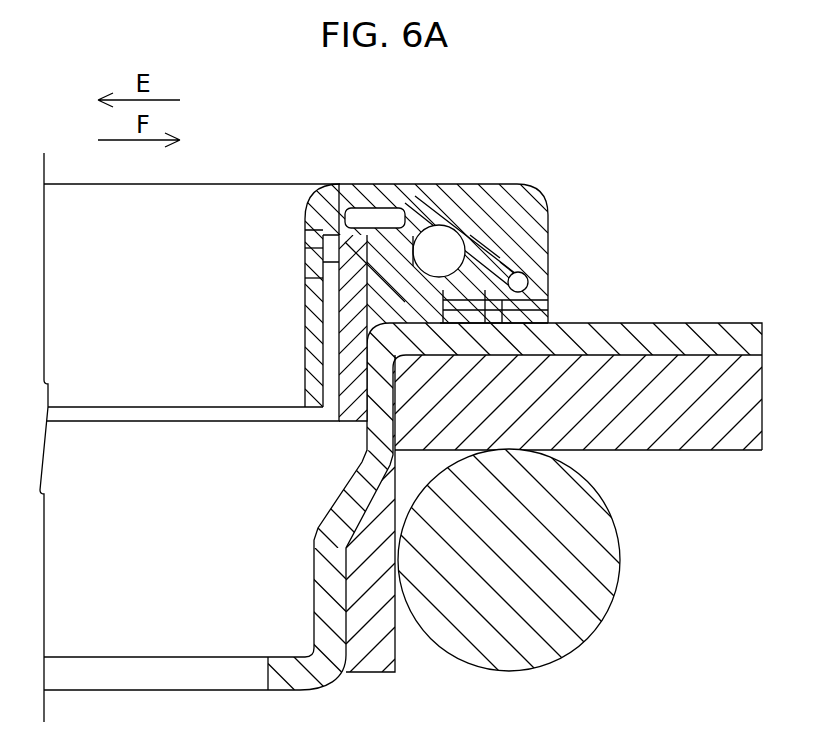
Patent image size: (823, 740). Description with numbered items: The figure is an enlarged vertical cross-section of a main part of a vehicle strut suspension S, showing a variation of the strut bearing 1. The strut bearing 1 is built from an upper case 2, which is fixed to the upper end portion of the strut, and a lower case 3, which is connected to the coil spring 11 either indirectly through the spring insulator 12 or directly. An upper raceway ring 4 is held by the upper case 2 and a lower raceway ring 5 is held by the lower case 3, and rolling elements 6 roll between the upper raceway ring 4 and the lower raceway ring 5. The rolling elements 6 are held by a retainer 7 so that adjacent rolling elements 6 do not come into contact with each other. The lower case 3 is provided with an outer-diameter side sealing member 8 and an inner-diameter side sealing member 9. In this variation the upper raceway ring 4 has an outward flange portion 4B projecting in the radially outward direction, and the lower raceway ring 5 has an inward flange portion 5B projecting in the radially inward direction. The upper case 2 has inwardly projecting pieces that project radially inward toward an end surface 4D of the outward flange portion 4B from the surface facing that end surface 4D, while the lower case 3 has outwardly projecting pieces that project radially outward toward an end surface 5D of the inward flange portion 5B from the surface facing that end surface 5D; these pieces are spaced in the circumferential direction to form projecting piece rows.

The strut bearing 1 is at (422, 249).
The upper case 2 is at (454, 165).
The lower case 3 is at (528, 312).
The upper raceway ring 4 is at (471, 230).
The outward flange portion 4B is at (495, 245).
The end surface 4D is at (512, 250).
The lower raceway ring 5 is at (330, 303).
The inward flange portion 5B is at (328, 280).
The end surface 5D is at (328, 248).
The rolling elements 6 is at (437, 240).
The retainer 7 is at (405, 205).
The outer-diameter side sealing member 8 is at (530, 283).
The inner-diameter side sealing member 9 is at (340, 184).
The coil spring 11 is at (583, 593).
The spring insulator 12 is at (738, 451).
The vehicle strut suspension S is at (710, 310).